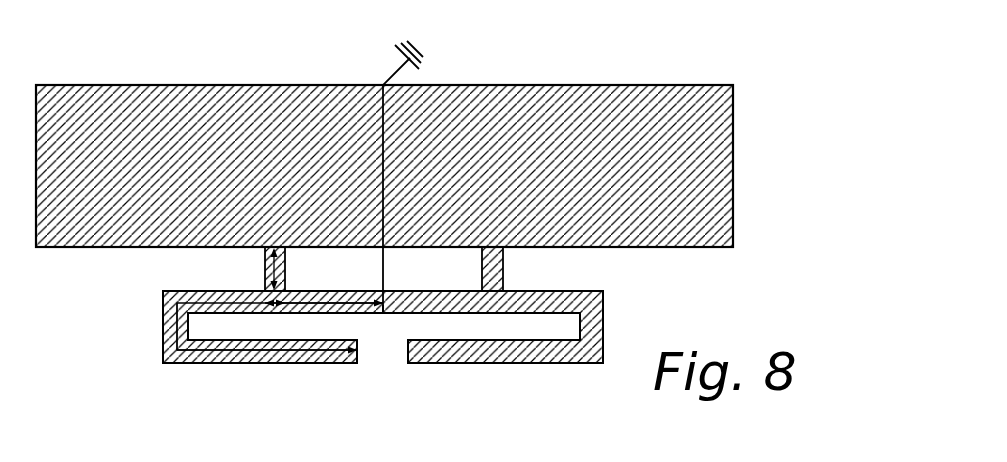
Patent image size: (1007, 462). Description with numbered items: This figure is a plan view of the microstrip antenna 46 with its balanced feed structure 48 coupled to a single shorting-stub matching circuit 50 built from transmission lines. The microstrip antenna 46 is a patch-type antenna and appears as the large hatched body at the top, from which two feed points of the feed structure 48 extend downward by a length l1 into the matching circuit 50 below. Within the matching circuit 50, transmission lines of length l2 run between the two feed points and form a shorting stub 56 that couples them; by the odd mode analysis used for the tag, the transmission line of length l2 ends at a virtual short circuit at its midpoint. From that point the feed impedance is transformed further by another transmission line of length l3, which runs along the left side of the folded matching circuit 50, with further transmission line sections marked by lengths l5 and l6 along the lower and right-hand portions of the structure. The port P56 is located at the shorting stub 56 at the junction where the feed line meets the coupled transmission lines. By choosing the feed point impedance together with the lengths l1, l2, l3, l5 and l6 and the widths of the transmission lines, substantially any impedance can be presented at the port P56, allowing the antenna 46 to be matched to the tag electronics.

The microstrip antenna 46 is at (574, 87).
The feed structure 48 is at (208, 269).
The matching circuit 50 is at (223, 370).
The shorting stub 56 is at (383, 317).
The port P56 is at (376, 355).
The feed point extension length l1 is at (259, 269).
The shorting stub transmission line length l2 is at (324, 286).
The transforming transmission line length l3 is at (156, 326).
The dimension l5 is at (267, 369).
The dimension l6 is at (505, 376).